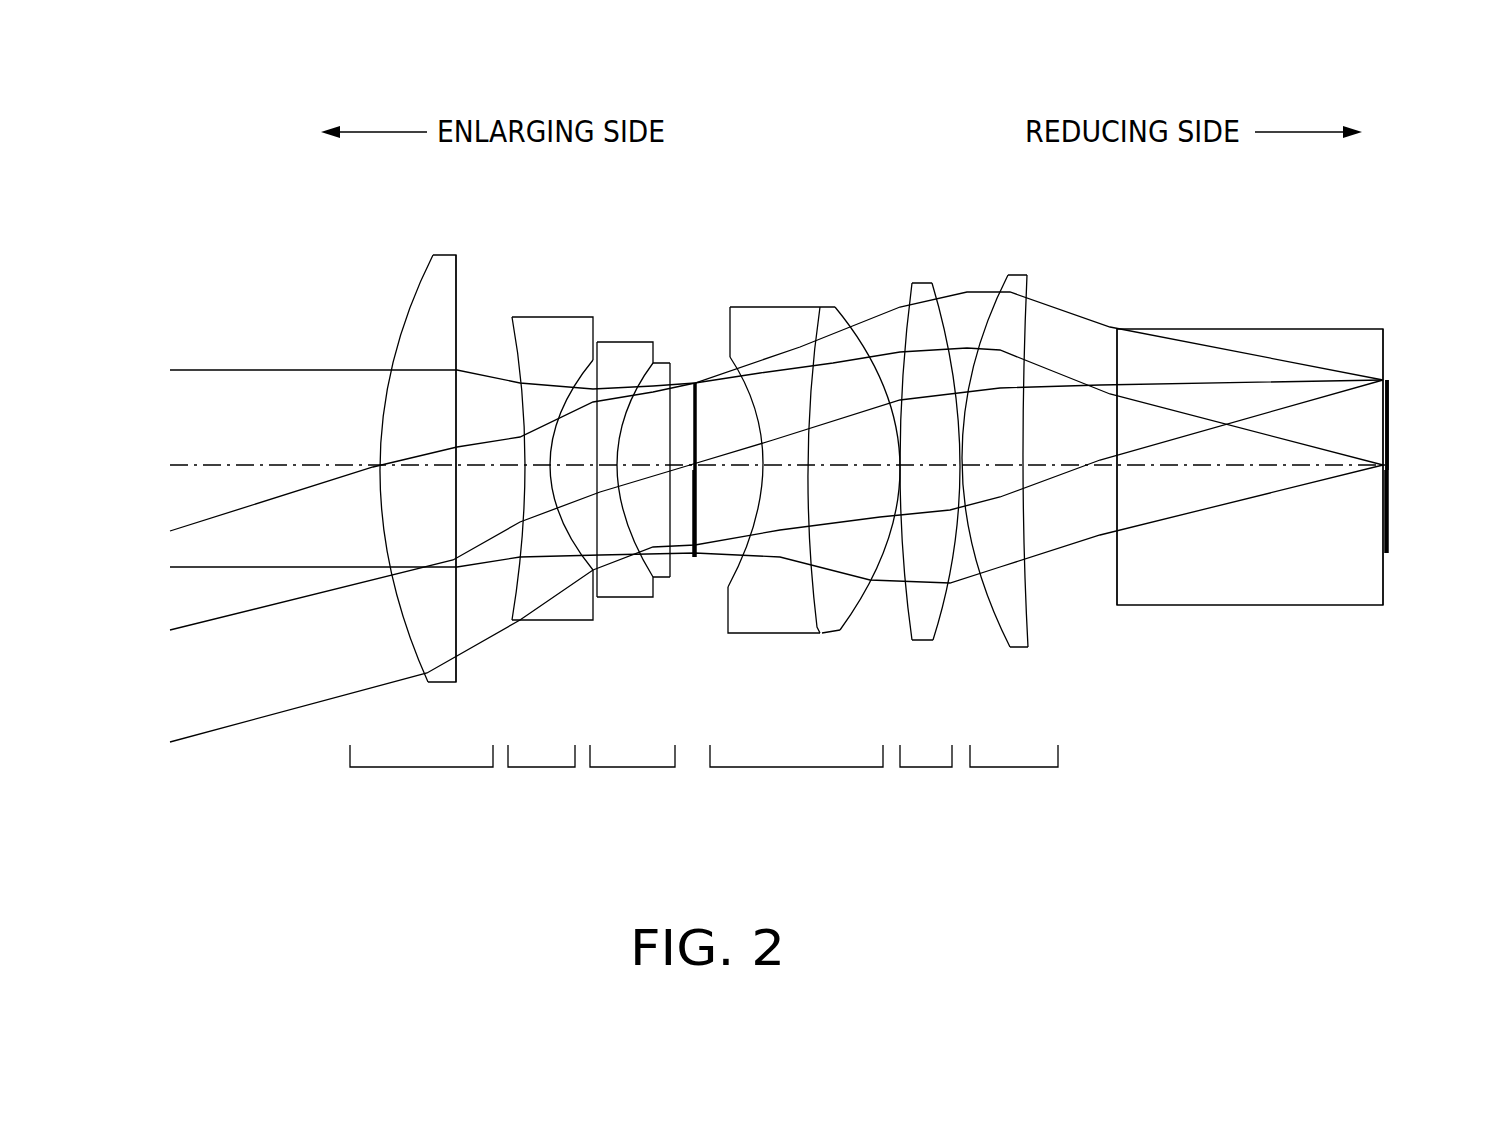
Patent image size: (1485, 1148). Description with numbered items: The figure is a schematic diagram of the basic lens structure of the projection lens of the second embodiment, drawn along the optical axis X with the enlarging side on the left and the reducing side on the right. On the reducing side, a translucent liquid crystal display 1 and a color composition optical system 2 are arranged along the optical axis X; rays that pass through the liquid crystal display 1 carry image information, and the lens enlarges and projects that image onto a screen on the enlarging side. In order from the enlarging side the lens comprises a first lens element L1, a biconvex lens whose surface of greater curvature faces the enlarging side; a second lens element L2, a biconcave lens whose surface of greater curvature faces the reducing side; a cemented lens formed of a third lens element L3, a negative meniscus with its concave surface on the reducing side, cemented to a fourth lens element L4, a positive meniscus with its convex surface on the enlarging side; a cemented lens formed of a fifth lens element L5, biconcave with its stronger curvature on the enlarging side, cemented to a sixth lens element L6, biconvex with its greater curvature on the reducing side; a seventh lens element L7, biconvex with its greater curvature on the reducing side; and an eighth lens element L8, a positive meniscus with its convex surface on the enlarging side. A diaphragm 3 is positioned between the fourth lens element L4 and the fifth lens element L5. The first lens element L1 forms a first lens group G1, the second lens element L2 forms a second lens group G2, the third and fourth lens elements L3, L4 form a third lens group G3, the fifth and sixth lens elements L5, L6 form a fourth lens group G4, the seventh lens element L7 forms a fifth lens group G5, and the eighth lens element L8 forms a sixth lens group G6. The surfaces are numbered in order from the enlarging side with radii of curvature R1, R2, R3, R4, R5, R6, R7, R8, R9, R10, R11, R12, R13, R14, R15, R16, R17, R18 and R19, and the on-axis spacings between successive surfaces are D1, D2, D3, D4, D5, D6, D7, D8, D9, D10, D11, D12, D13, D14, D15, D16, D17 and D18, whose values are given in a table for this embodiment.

The translucent liquid crystal display 1 is at (1432, 483).
The color composition optical system 2 is at (1287, 471).
The diaphragm 3 is at (700, 464).
The optical axis X is at (210, 462).
The first lens element L1 is at (408, 463).
The second lens element L2 is at (541, 467).
The third lens element L3 is at (615, 476).
The fourth lens element L4 is at (670, 473).
The fifth lens element L5 is at (768, 468).
The sixth lens element L6 is at (858, 468).
The seventh lens element L7 is at (941, 474).
The eighth lens element L8 is at (1030, 469).
The first lens group G1 is at (421, 785).
The second lens group G2 is at (541, 785).
The third lens group G3 is at (632, 785).
The fourth lens group G4 is at (796, 785).
The fifth lens group G5 is at (926, 785).
The sixth lens group G6 is at (1014, 785).
The radius of curvature of surface 1 R1 is at (402, 600).
The radius of curvature of surface 2 R2 is at (463, 650).
The radius of curvature of surface 3 R3 is at (490, 630).
The radius of curvature of surface 4 R4 is at (540, 605).
The radius of curvature of surface 5 R5 is at (598, 605).
The radius of curvature of surface 6 R6 is at (637, 597).
The radius of curvature of surface 7 R7 is at (668, 598).
The radius of curvature of surface 8 R8 is at (692, 558).
The radius of curvature of surface 9 R9 is at (722, 578).
The radius of curvature of surface 10 R10 is at (806, 605).
The radius of curvature of surface 11 R11 is at (860, 600).
The radius of curvature of surface 12 R12 is at (902, 635).
The radius of curvature of surface 13 R13 is at (950, 625).
The radius of curvature of surface 14 R14 is at (1005, 645).
The radius of curvature of surface 15 R15 is at (1048, 642).
The radius of curvature of surface 16 R16 is at (1112, 592).
The radius of curvature of surface 17 R17 is at (1385, 605).
The radius of curvature of surface 18 R18 is at (1388, 560).
The radius of curvature of surface 19 R19 is at (1393, 538).
The on-axis surface spacing 1 D1 is at (395, 478).
The on-axis surface spacing 2 D2 is at (455, 440).
The on-axis surface spacing 3 D3 is at (506, 455).
The on-axis surface spacing 4 D4 is at (512, 472).
The on-axis surface spacing 5 D5 is at (593, 474).
The on-axis surface spacing 6 D6 is at (634, 476).
The on-axis surface spacing 7 D7 is at (665, 472).
The on-axis surface spacing 8 D8 is at (738, 465).
The on-axis surface spacing 9 D9 is at (788, 470).
The on-axis surface spacing 10 D10 is at (836, 470).
The on-axis surface spacing 11 D11 is at (897, 474).
The on-axis surface spacing 12 D12 is at (925, 465).
The on-axis surface spacing 13 D13 is at (968, 465).
The on-axis surface spacing 14 D14 is at (1003, 468).
The on-axis surface spacing 15 D15 is at (1066, 466).
The on-axis surface spacing 16 D16 is at (1222, 470).
The on-axis surface spacing 17 D17 is at (1393, 456).
The on-axis surface spacing 18 D18 is at (1393, 498).